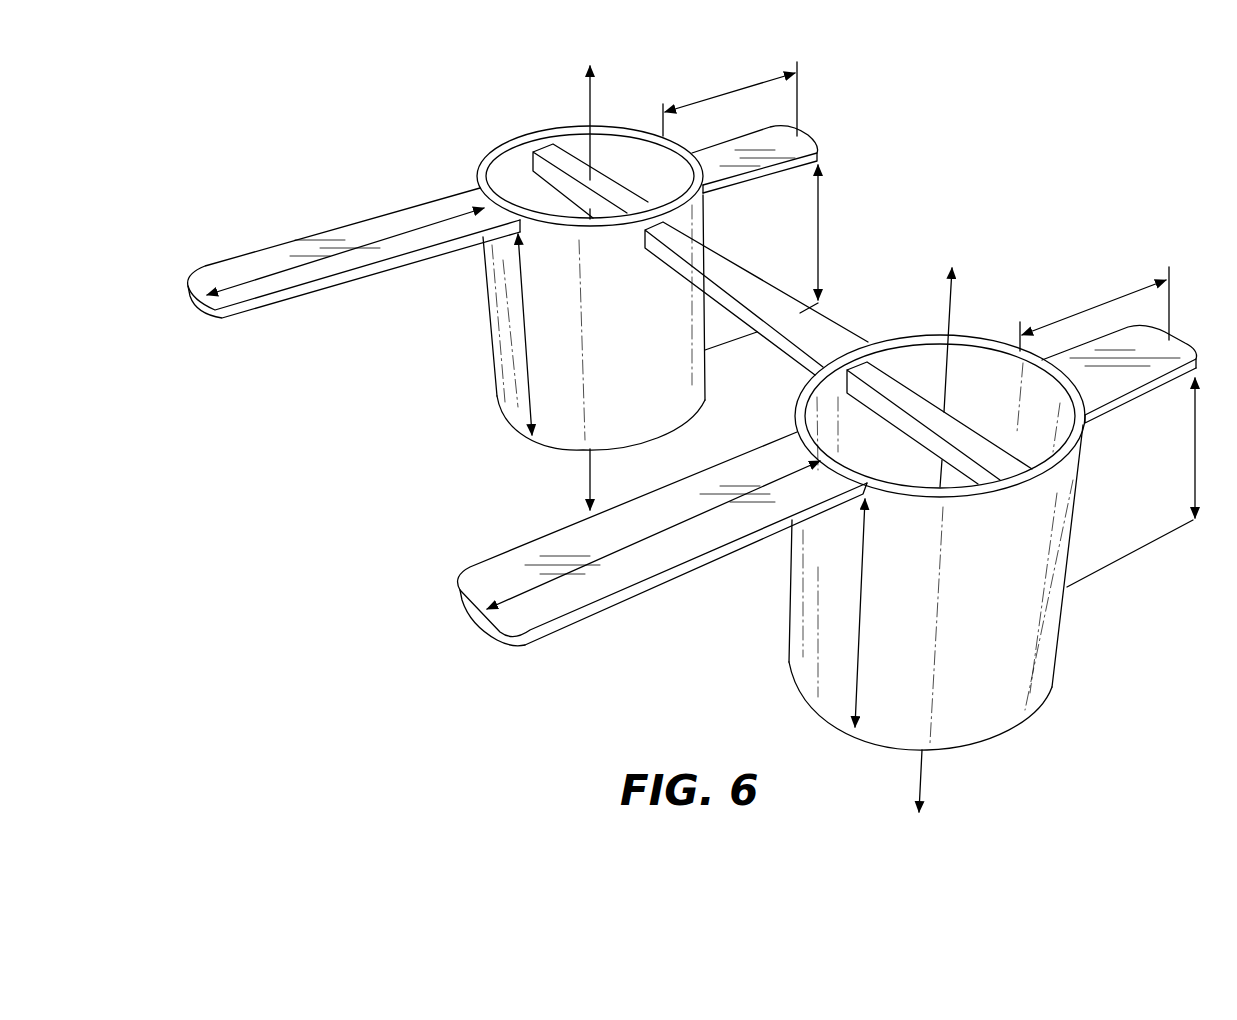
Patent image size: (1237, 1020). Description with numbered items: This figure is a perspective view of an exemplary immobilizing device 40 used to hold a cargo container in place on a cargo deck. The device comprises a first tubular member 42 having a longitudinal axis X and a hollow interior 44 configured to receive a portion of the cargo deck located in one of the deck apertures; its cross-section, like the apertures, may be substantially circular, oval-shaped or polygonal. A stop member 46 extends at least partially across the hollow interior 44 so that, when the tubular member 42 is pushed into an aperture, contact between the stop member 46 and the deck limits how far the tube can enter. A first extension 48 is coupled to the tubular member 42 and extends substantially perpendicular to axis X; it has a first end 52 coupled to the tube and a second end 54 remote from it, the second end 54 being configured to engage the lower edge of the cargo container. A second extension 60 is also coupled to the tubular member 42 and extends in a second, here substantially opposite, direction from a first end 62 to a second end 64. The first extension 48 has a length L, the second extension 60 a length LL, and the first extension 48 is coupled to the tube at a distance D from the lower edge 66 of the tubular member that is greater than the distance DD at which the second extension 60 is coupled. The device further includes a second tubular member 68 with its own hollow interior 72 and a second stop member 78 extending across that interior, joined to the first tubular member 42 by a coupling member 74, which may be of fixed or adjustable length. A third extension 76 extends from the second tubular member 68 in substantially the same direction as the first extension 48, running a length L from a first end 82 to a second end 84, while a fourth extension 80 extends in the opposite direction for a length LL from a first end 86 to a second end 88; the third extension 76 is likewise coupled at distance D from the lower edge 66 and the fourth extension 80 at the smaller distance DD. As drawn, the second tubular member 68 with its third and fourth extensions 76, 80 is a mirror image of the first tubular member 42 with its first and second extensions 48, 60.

The immobilizing device 40 is at (1020, 155).
The tubular member 42 is at (1008, 630).
The hollow interior 44 is at (985, 360).
The stop member 46 is at (893, 390).
The extension 48 is at (603, 608).
The first end 52 is at (797, 434).
The second end 54 is at (523, 615).
The second extension 60 is at (1170, 352).
The first end 62 is at (1098, 420).
The second end 64 is at (1197, 366).
The lower edge 66 is at (550, 450).
The second tubular member 68 is at (625, 335).
The hollow interior 72 is at (640, 140).
The coupling member 74 is at (777, 333).
The third extension 76 is at (413, 212).
The second stop member 78 is at (553, 162).
The fourth extension 80 is at (797, 140).
The first end 82 is at (487, 236).
The second end 84 is at (234, 302).
The first end 86 is at (702, 195).
The second end 88 is at (812, 150).